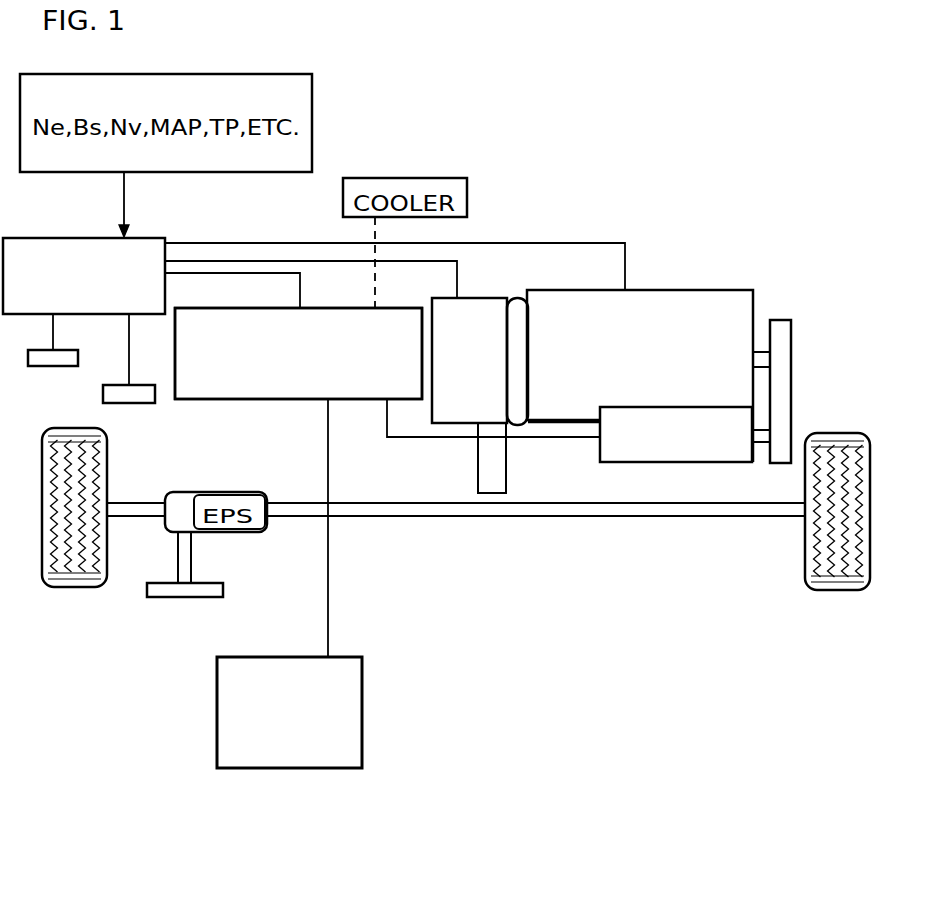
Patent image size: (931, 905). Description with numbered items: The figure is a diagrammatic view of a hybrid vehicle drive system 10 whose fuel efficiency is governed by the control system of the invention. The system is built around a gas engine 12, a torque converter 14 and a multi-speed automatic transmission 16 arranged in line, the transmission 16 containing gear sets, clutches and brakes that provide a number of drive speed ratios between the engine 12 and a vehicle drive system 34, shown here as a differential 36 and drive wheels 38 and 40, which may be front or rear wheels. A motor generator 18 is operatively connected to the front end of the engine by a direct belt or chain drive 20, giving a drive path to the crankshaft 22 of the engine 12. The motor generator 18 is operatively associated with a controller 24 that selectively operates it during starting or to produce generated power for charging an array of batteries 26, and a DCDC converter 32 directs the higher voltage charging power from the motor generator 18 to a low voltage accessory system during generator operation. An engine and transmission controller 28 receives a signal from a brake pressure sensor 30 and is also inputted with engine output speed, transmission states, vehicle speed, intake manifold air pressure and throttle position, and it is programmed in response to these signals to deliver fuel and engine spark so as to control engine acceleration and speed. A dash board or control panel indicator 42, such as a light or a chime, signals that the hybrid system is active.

The hybrid vehicle drive system 10 is at (484, 84).
The gas engine 12 is at (640, 376).
The torque converter 14 is at (549, 344).
The multi-speed automatic transmission 16 is at (469, 360).
The motor generator 18 is at (640, 434).
The direct belt or chain drive 20 is at (783, 412).
The crankshaft 22 is at (795, 348).
The controller 24 is at (298, 353).
The array of batteries 26 is at (363, 700).
The engine and transmission controller 28 is at (63, 236).
The brake pressure sensor 30 is at (138, 405).
The DCDC converter 32 is at (298, 353).
The vehicle drive system 34 is at (600, 518).
The differential 36 is at (478, 468).
The drive wheel 38 is at (828, 592).
The drive wheel 40 is at (75, 588).
The hybrid system active indicator 42 is at (52, 370).